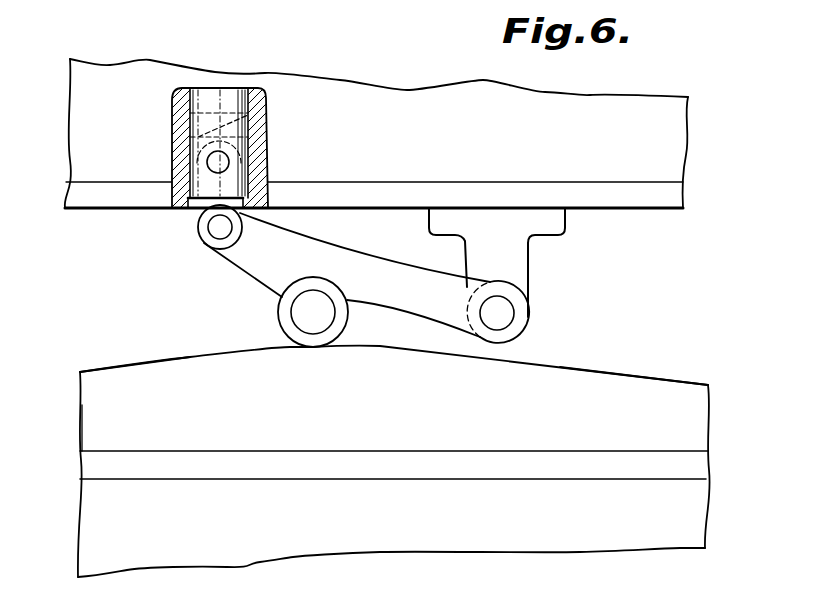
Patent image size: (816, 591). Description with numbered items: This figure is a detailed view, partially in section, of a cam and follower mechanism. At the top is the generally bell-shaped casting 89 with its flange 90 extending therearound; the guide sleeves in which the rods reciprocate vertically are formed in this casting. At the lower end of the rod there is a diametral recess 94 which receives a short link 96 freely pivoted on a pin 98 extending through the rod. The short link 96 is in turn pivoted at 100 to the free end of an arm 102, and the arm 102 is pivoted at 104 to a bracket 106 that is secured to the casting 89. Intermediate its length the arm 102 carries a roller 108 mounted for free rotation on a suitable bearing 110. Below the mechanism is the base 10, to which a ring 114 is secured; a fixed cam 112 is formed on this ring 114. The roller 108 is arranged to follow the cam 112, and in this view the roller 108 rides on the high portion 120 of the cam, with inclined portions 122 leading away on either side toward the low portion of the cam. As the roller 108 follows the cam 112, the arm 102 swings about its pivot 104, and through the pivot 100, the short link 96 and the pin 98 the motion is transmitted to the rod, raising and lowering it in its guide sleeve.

The base 10 is at (83, 530).
The bell-shaped casting 89 is at (447, 70).
The flange 90 is at (373, 200).
The diametral recess 94 is at (248, 115).
The short link 96 is at (240, 212).
The pin 98 is at (219, 162).
The pivot 100 is at (220, 228).
The arm 102 is at (261, 286).
The pivot 104 is at (507, 313).
The bracket 106 is at (512, 265).
The roller 108 is at (281, 326).
The bearing 110 is at (326, 318).
The fixed cam 112 is at (93, 410).
The ring 114 is at (95, 465).
The high portion 120 is at (398, 347).
The inclined portions 122 is at (193, 353).